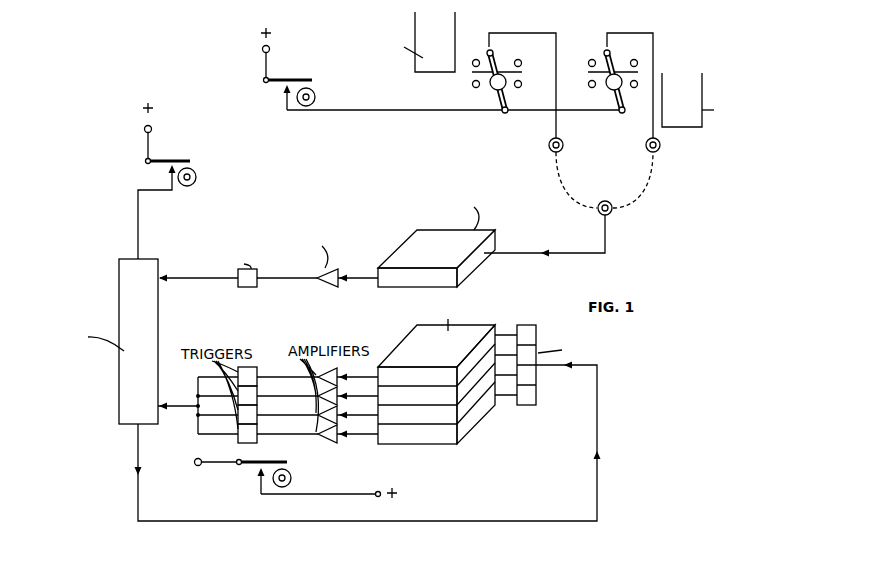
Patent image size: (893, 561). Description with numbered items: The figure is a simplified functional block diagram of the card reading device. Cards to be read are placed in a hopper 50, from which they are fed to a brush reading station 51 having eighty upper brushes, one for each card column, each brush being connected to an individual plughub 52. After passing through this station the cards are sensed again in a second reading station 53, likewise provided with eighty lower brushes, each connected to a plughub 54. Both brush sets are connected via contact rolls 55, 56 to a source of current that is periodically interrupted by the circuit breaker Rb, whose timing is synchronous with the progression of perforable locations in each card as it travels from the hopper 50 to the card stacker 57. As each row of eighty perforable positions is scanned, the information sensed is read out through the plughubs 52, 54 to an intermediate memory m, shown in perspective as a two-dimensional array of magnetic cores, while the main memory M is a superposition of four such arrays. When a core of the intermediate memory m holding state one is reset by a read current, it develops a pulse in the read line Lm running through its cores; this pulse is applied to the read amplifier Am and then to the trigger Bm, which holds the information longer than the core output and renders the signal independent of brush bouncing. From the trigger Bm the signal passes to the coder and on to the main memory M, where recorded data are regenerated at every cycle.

The hopper 50 is at (397, 42).
The brush reading station 51 is at (503, 85).
The plughub 52 is at (563, 147).
The reading station 53 is at (612, 85).
The plughub 54 is at (660, 147).
The contact roll 55 is at (494, 86).
The contact roll 56 is at (611, 86).
The card stacker 57 is at (720, 100).
The circuit breaker Rb is at (312, 80).
The trigger Bm is at (250, 288).
The read amplifier Am is at (327, 288).
The read line Lm is at (355, 277).
The intermediate memory m is at (443, 236).
The main memory M is at (433, 373).